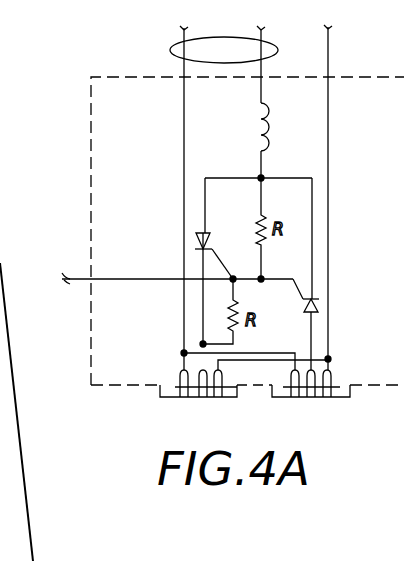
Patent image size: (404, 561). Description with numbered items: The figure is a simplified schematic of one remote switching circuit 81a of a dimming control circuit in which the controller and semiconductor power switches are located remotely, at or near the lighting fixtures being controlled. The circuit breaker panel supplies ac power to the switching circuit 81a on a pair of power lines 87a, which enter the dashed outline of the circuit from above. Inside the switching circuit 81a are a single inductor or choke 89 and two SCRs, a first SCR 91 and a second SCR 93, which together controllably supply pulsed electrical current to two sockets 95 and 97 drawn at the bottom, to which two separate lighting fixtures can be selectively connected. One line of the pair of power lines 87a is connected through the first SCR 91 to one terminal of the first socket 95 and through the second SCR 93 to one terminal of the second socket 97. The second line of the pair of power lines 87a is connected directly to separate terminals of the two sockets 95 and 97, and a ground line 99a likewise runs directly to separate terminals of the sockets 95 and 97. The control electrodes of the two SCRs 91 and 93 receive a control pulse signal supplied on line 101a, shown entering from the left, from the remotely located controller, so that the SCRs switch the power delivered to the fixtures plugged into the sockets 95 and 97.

The switching circuit 81a is at (117, 77).
The pair of power lines 87a is at (172, 47).
The ground line 99a is at (328, 65).
The inductor or choke 89 is at (270, 116).
The first SCR 91 is at (205, 243).
The second SCR 93 is at (319, 300).
The control pulse signal line 101a is at (70, 284).
The first socket 95 is at (160, 392).
The second socket 97 is at (350, 390).